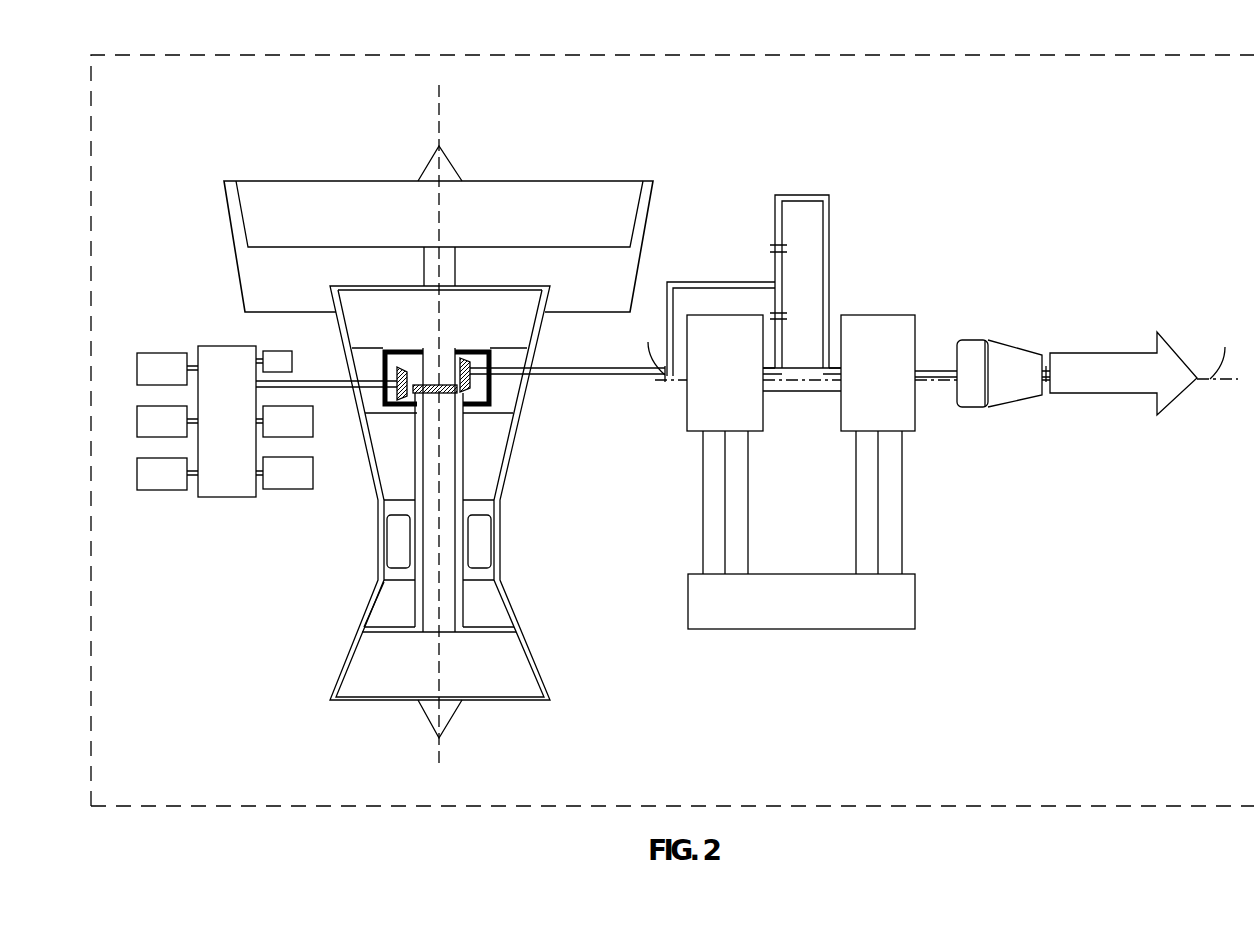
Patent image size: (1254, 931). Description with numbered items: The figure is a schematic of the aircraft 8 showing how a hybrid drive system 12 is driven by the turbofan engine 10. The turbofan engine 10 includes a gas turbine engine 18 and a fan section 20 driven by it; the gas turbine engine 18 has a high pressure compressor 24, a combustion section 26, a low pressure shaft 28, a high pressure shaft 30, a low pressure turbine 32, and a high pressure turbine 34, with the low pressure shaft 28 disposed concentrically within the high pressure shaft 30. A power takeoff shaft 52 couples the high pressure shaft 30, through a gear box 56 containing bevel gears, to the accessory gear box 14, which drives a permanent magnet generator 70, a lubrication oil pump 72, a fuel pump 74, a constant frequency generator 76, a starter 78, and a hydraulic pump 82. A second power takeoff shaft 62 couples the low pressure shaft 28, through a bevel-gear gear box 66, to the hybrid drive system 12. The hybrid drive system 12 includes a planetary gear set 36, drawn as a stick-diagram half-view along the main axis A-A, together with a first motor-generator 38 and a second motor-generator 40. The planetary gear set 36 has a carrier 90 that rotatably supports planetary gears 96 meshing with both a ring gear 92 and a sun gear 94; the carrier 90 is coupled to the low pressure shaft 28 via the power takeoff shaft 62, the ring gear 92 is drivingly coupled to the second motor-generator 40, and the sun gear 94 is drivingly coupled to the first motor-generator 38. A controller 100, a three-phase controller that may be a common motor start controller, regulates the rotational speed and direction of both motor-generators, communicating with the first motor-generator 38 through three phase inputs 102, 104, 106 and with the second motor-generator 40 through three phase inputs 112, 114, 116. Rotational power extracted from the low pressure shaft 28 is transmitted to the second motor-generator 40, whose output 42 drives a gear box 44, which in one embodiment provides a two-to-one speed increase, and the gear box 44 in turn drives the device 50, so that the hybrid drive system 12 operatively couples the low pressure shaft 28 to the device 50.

The aircraft 8 is at (128, 54).
The turbofan engine 10 is at (640, 150).
The hybrid drive system 12 is at (953, 150).
The accessory gear box 14 is at (214, 437).
The gas turbine engine 18 is at (389, 512).
The fan section 20 is at (517, 181).
The high pressure compressor 24 is at (490, 450).
The combustion section 26 is at (500, 556).
The low pressure shaft 28 is at (445, 620).
The high pressure shaft 30 is at (460, 536).
The low pressure turbine 32 is at (510, 662).
The high pressure turbine 34 is at (387, 608).
The planetary gear set 36 is at (811, 396).
The first motor-generator 38 is at (687, 405).
The second motor-generator 40 is at (896, 315).
The output 42 is at (928, 372).
The gear box 44 is at (975, 340).
The device 50 is at (1015, 360).
The power takeoff shaft 52 is at (322, 388).
The gear box 56 is at (398, 350).
The power takeoff shaft 62 is at (590, 376).
The gear box 66 is at (478, 350).
The permanent magnet generator 70 is at (272, 351).
The lubrication oil pump 72 is at (275, 436).
The fuel pump 74 is at (275, 488).
The constant frequency generator 76 is at (145, 385).
The starter 78 is at (145, 436).
The hydraulic pump 82 is at (145, 488).
The carrier 90 is at (700, 282).
The ring gear 92 is at (805, 195).
The sun gear 94 is at (782, 342).
The planetary gears 96 is at (782, 297).
The controller 100 is at (752, 629).
The phase input 102 is at (748, 447).
The phase input 104 is at (725, 485).
The phase input 106 is at (703, 527).
The phase input 112 is at (856, 445).
The phase input 114 is at (878, 483).
The phase input 116 is at (902, 523).